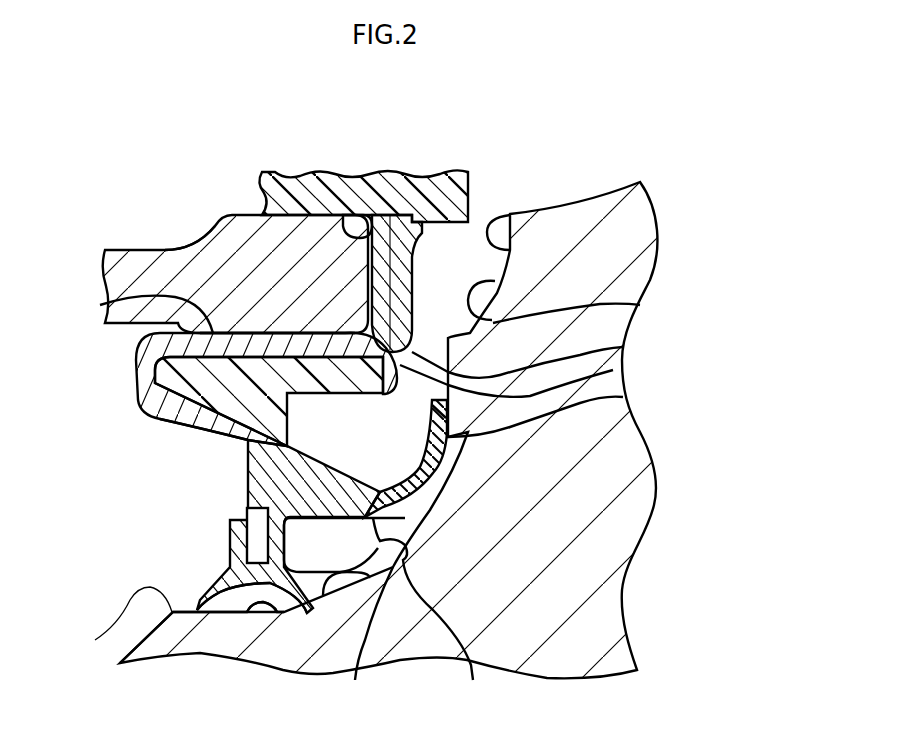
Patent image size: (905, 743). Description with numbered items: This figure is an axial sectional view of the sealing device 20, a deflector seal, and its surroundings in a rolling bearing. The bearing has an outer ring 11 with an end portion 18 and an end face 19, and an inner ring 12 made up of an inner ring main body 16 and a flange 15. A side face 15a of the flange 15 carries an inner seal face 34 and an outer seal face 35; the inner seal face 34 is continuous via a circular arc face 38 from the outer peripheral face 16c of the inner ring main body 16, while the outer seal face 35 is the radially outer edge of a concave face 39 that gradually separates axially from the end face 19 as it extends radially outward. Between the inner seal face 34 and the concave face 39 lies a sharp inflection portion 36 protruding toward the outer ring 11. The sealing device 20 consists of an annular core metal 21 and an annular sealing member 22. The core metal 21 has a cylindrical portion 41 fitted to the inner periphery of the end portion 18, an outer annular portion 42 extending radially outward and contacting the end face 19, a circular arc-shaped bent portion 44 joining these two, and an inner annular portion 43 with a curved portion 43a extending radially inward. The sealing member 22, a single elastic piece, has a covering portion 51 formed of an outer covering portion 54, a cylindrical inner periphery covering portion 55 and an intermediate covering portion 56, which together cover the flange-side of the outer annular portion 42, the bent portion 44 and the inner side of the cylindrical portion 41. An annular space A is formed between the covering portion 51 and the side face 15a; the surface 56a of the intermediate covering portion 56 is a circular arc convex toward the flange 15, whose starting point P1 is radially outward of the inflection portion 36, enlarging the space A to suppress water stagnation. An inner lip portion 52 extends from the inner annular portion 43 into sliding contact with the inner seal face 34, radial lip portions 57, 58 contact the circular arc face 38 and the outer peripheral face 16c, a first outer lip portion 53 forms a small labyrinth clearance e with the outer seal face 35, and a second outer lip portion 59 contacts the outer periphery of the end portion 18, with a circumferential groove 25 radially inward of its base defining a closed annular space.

The outer ring 11 is at (150, 283).
The inner ring 12 is at (95, 640).
The flange 15 is at (599, 186).
The side face of the flange 15a is at (292, 333).
The inner ring main body 16 is at (183, 637).
The outer peripheral face of the inner ring main body 16c is at (277, 613).
The end portion of the outer ring 18 is at (237, 282).
The end face of the outer ring 19 is at (415, 205).
The sealing device 20 is at (207, 473).
The core metal 21 is at (121, 374).
The sealing member 22 is at (223, 397).
The circumferential groove 25 is at (343, 222).
The inner seal face 34 is at (433, 398).
The outer seal face 35 is at (472, 285).
The inflection portion 36 is at (448, 340).
The circular arc face 38 is at (473, 680).
The concave face 39 is at (640, 305).
The cylindrical portion 41 is at (100, 305).
The outer annular portion 42 is at (290, 192).
The inner annular portion 43 is at (240, 490).
The curved portion 43a is at (217, 423).
The circular arc-shaped bent portion 44 is at (273, 295).
The covering portion 51 is at (607, 384).
The inner lip portion 52 is at (436, 490).
The first outer lip portion 53 is at (426, 186).
The outer covering portion 54 is at (623, 347).
The inner periphery covering portion 55 is at (623, 397).
The intermediate covering portion 56 is at (613, 370).
The surface of the intermediate covering portion 56a is at (487, 397).
The radial lip portion 57 is at (356, 676).
The radial lip portion 58 is at (213, 633).
The second outer lip portion 59 is at (298, 185).
The starting point of the circular arc shape P1 is at (365, 332).
The space A is at (451, 283).
The small clearance e is at (494, 197).